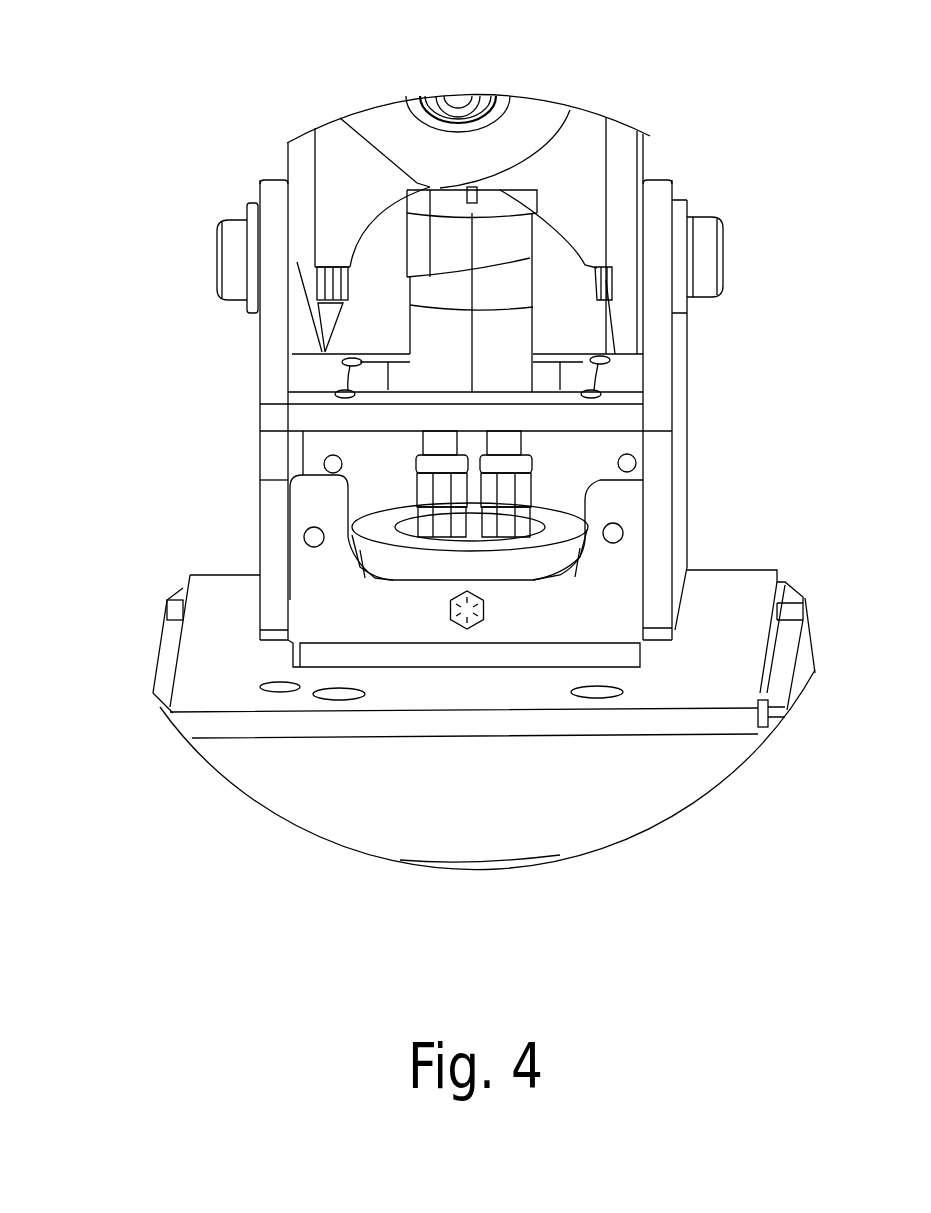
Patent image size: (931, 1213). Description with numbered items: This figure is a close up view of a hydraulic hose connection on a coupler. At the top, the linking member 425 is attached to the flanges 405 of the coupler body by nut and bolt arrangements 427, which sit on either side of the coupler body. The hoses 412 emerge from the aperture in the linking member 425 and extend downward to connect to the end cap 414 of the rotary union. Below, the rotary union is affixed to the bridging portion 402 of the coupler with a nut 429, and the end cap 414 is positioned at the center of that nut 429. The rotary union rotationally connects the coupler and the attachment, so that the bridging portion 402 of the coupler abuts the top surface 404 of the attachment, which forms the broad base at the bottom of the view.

The linking member 425 is at (438, 300).
The hoses 412 is at (337, 247).
The nut and bolt arrangements 427 is at (250, 292).
The end cap 414 is at (403, 527).
The flanges 405 is at (300, 457).
The nut 429 is at (380, 557).
The bridging portion 402 is at (335, 620).
The top surface 404 is at (235, 685).